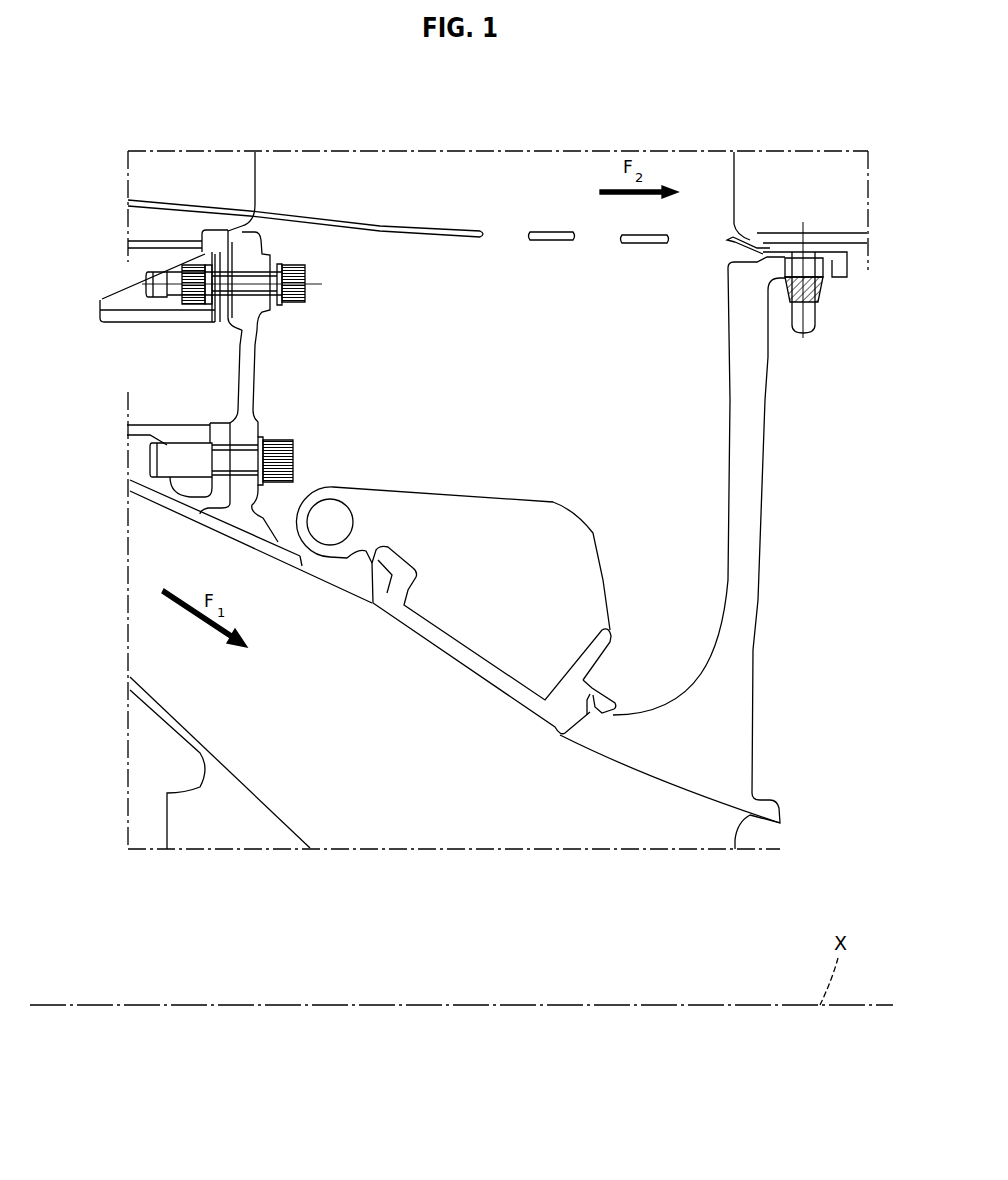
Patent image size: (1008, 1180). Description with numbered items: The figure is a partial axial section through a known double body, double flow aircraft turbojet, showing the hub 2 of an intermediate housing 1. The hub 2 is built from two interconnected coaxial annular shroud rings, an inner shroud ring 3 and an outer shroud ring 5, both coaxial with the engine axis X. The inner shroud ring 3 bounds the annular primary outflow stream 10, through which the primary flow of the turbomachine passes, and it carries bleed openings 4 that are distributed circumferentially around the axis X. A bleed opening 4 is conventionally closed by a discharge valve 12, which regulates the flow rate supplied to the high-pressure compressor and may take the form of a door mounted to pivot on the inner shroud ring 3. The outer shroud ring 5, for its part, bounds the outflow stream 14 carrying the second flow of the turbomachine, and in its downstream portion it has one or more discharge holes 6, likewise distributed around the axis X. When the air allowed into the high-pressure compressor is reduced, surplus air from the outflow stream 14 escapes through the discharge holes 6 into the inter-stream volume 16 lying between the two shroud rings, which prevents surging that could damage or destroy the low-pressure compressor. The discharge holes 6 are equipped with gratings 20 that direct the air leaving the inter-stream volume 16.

The intermediate housing 1 is at (286, 129).
The hub 2 is at (154, 748).
The inner shroud ring 3 is at (300, 566).
The bleed opening 4 is at (429, 665).
The outer shroud ring 5 is at (777, 241).
The discharge hole 6 is at (520, 223).
The primary outflow stream 10 is at (421, 773).
The discharge valve 12 is at (608, 573).
The outflow stream 14 is at (441, 198).
The inter-stream volume 16 is at (489, 431).
The grating 20 is at (728, 243).